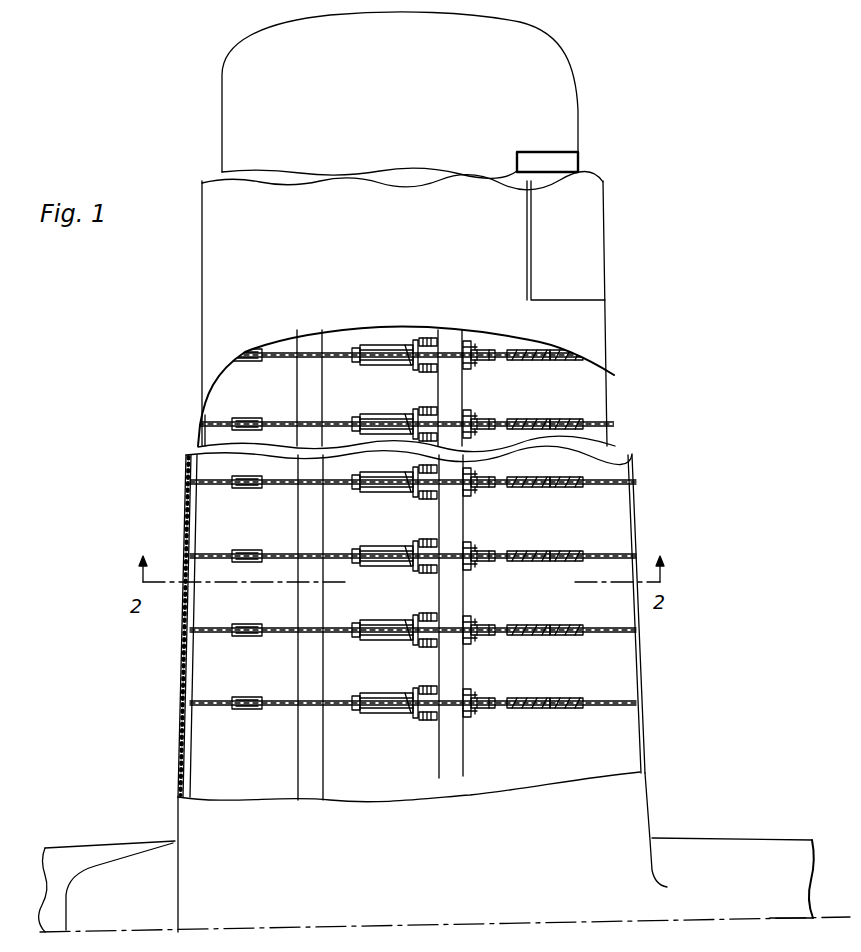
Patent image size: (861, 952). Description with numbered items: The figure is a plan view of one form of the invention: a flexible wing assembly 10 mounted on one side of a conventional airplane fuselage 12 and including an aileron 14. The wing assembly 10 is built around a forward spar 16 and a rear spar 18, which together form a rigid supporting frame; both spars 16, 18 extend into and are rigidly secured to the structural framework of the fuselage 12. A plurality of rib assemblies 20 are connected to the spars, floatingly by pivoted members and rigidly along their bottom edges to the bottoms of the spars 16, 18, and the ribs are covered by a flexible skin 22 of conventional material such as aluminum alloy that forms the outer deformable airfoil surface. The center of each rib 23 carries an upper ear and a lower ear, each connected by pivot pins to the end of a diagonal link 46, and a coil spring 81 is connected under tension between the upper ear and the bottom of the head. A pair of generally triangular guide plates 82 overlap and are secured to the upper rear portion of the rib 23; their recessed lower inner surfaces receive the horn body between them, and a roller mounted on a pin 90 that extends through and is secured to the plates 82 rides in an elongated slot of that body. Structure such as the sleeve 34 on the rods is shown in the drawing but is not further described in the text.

The flexible wing assembly 10 is at (622, 233).
The airplane fuselage 12 is at (690, 843).
The aileron 14 is at (592, 200).
The forward spar 16 is at (330, 771).
The rear spar 18 is at (470, 768).
The rib assemblies 20 is at (243, 717).
The flexible skin 22 is at (190, 485).
The rib 23 is at (203, 557).
The sleeve 34 is at (257, 546).
The diagonal link 46 is at (379, 642).
The coil spring 81 is at (425, 651).
The guide plates 82 is at (570, 701).
The pin 90 is at (552, 698).